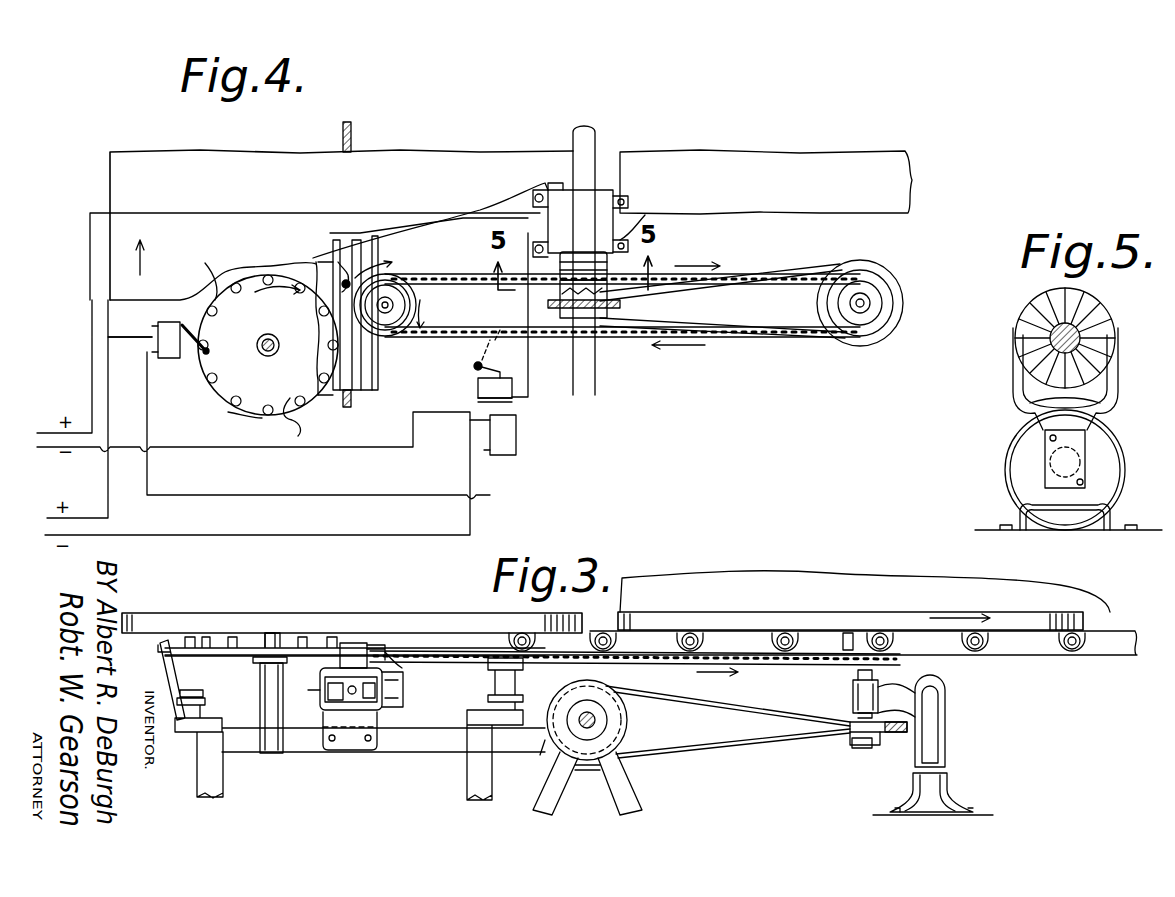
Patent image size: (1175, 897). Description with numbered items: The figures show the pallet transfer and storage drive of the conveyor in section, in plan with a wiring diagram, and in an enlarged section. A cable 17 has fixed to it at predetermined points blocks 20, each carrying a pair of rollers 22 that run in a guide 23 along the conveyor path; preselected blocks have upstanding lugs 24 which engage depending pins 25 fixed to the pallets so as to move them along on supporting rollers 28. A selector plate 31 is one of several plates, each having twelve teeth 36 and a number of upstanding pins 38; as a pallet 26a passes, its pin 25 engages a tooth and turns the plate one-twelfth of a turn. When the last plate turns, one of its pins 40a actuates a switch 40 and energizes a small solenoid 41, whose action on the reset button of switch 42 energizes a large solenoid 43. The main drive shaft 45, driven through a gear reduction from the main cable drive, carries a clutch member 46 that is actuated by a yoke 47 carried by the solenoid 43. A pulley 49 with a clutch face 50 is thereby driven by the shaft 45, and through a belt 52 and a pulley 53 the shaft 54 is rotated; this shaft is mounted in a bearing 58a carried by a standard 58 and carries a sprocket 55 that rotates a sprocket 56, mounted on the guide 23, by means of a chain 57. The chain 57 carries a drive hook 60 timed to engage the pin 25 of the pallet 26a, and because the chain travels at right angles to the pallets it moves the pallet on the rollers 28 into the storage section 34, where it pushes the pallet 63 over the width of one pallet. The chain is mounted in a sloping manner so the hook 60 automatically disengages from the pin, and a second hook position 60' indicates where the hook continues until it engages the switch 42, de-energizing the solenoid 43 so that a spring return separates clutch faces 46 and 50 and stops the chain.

In FIG. 3, the cable 17 is at (352, 712).
In FIG. 3, the block 20 is at (393, 702).
In FIG. 3, the rollers 22 is at (392, 692).
In FIG. 3, the guide 23 is at (320, 693).
In FIG. 3, the upstanding lug 24 is at (335, 668).
In FIG. 4, the depending pin 25 is at (338, 258).
In FIG. 3, the depending pin 25 is at (340, 640).
In FIG. 4, the pallet 26a is at (145, 152).
In FIG. 3, the pallet 26a is at (188, 612).
In FIG. 3, the supporting roller 28 is at (1062, 660).
In FIG. 4, the selector plate 31 is at (213, 277).
In FIG. 3, the storage section 34 is at (730, 575).
In FIG. 4, the teeth 36 is at (250, 412).
In FIG. 4, the upstanding pins 38 is at (286, 421).
In FIG. 4, the switch 40 is at (165, 358).
In FIG. 4, the pin 40a is at (275, 340).
In FIG. 4, the small solenoid 41 is at (500, 456).
In FIG. 4, the switch 42 is at (478, 388).
In FIG. 4, the large solenoid 43 is at (546, 190).
In FIG. 5, the large solenoid 43 is at (1020, 462).
In FIG. 4, the main drive shaft 45 is at (595, 130).
In FIG. 3, the main drive shaft 45 is at (596, 720).
In FIG. 4, the clutch member 46 is at (560, 290).
In FIG. 5, the clutch member 46 is at (1027, 307).
In FIG. 4, the yoke 47 is at (645, 215).
In FIG. 4, the pulley 49 is at (573, 345).
In FIG. 3, the pulley 49 is at (527, 750).
In FIG. 4, the clutch face 50 is at (560, 300).
In FIG. 4, the belt 52 is at (688, 296).
In FIG. 3, the belt 52 is at (694, 755).
In FIG. 3, the pulley 53 is at (848, 734).
In FIG. 4, the shaft 54 is at (860, 312).
In FIG. 3, the shaft 54 is at (862, 745).
In FIG. 4, the sprocket 55 is at (815, 330).
In FIG. 3, the sprocket 55 is at (897, 660).
In FIG. 4, the sprocket 56 is at (396, 340).
In FIG. 3, the sprocket 56 is at (410, 650).
In FIG. 4, the chain 57 is at (465, 340).
In FIG. 3, the chain 57 is at (648, 668).
In FIG. 3, the standard 58 is at (945, 738).
In FIG. 3, the bearing 58a is at (853, 696).
In FIG. 4, the drive hook 60 is at (342, 261).
In FIG. 3, the drive hook 60 is at (372, 620).
In FIG. 4, the contact 60' is at (468, 357).
In FIG. 4, the pallet 63 is at (708, 152).
In FIG. 3, the pallet 63 is at (700, 625).